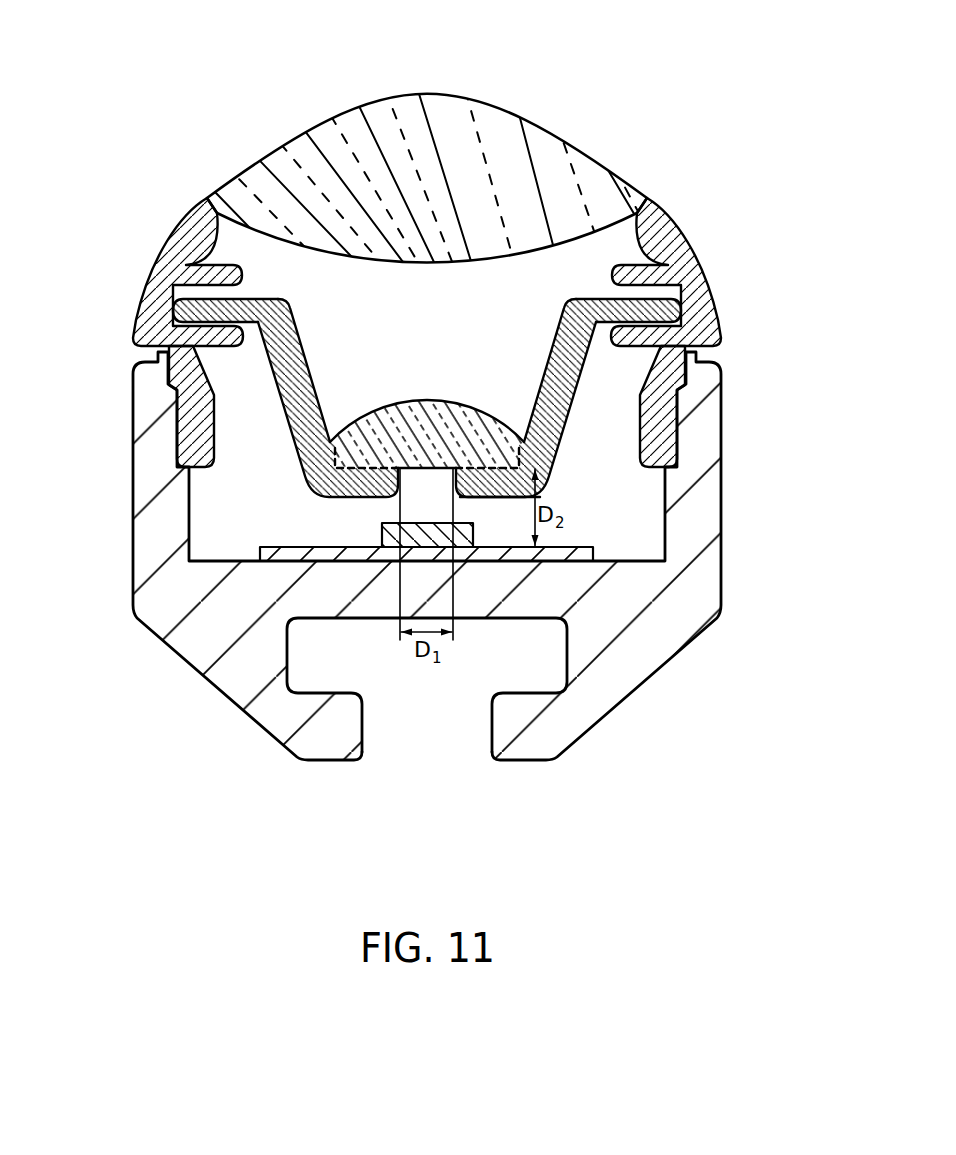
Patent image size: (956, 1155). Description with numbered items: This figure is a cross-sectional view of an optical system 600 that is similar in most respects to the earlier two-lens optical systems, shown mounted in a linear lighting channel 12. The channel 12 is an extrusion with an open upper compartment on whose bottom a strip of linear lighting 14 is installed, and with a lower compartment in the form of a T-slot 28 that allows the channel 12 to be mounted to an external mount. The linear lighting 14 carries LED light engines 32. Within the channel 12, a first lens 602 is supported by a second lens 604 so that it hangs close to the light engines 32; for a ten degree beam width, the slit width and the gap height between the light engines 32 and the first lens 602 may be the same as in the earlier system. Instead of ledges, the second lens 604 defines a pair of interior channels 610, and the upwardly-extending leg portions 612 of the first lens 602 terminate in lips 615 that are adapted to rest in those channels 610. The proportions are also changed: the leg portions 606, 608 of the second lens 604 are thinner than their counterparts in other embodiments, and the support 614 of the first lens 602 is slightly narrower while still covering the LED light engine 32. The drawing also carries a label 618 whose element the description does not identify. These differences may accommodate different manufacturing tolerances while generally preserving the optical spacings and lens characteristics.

The channel 12 is at (380, 593).
The linear lighting 14 is at (296, 540).
The T-slot 28 is at (437, 716).
The LED light engines 32 is at (458, 525).
The optical system 600 is at (435, 378).
The first lens 602 is at (523, 430).
The second lens 604 is at (486, 92).
The leg portion of the second lens 606 is at (176, 450).
The leg portion of the second lens 608 is at (676, 444).
The interior channels 610 is at (203, 262).
The leg portions of the first lens 612 is at (427, 504).
The support 614 is at (505, 512).
The lips 615 is at (250, 300).
The opening in holder 618 is at (409, 486).